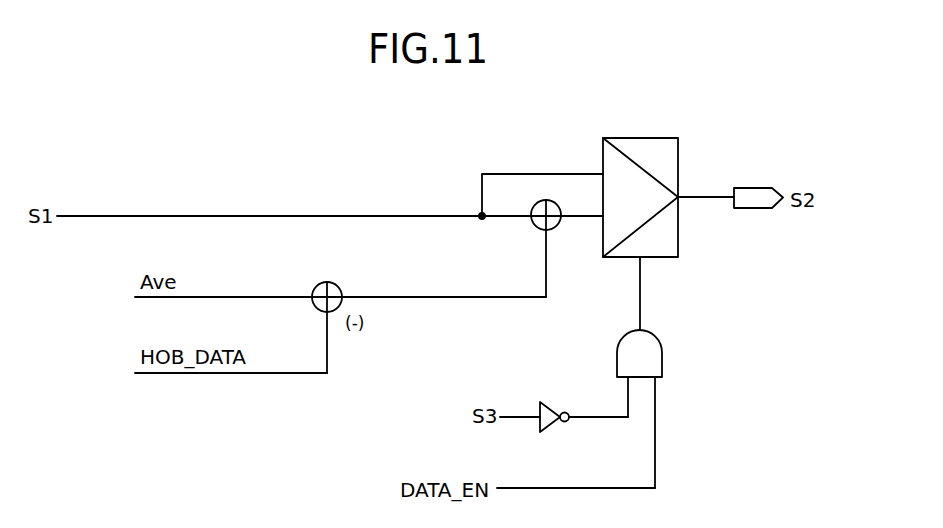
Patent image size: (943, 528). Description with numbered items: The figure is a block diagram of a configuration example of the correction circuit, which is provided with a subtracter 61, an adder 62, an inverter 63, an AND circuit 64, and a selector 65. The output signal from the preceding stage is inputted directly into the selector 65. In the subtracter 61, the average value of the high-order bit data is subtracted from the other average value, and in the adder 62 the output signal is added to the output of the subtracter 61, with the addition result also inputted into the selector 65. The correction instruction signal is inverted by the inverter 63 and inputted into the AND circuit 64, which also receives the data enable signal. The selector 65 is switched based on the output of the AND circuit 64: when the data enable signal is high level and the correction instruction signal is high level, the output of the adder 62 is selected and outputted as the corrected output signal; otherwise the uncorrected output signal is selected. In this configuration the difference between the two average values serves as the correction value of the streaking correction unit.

The subtracter 61 is at (331, 282).
The adder 62 is at (556, 226).
The inverter 63 is at (550, 425).
The AND circuit 64 is at (662, 352).
The selector 65 is at (650, 138).